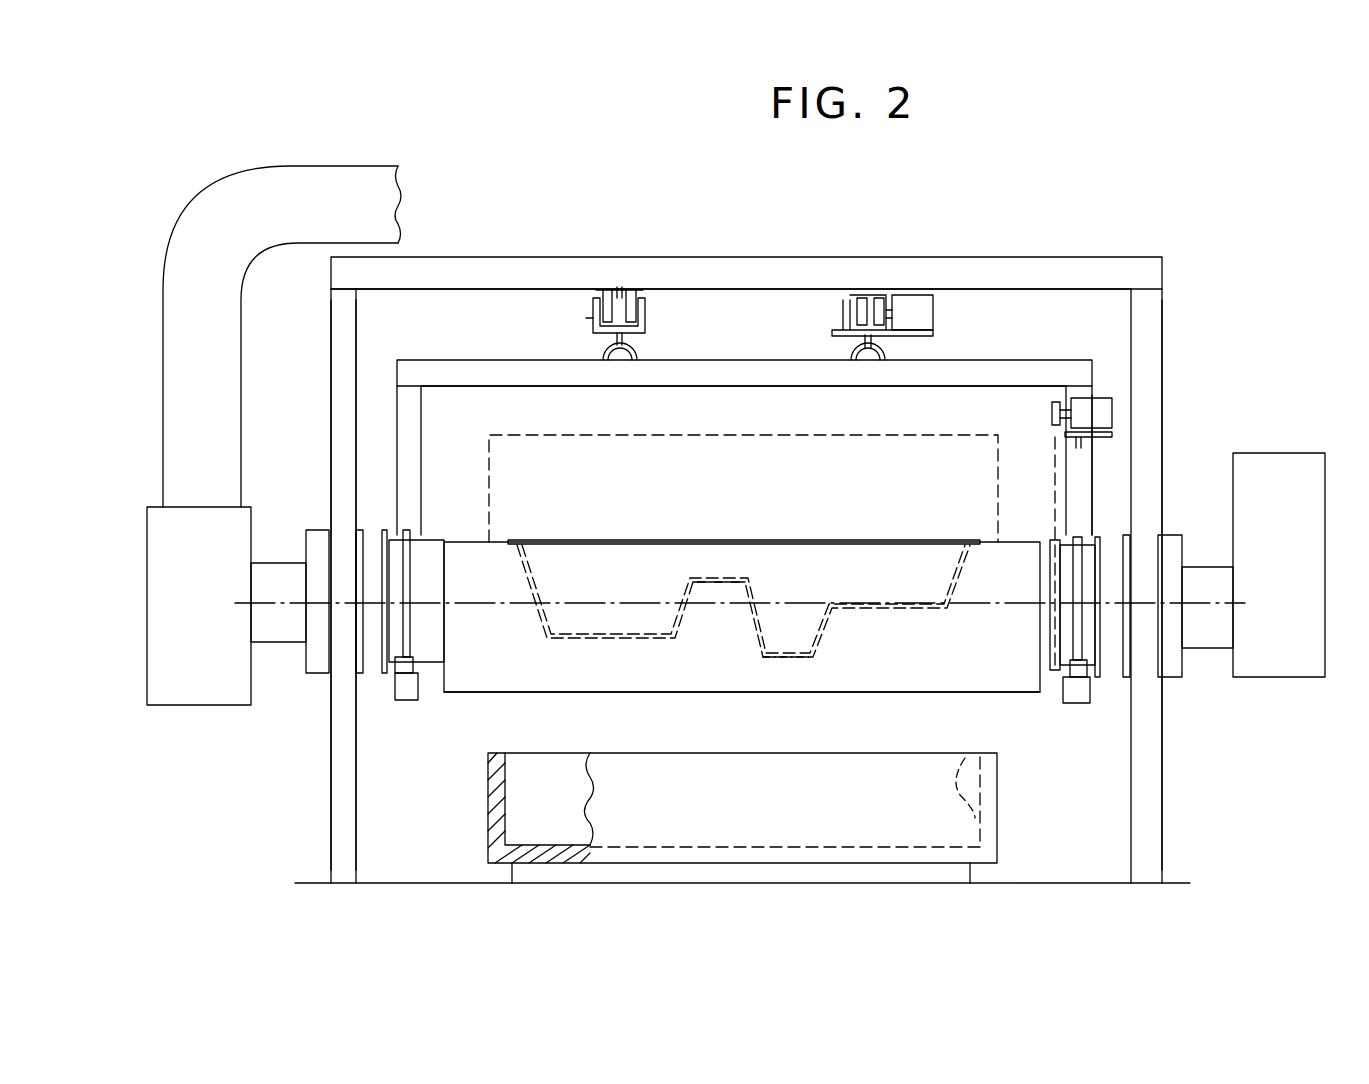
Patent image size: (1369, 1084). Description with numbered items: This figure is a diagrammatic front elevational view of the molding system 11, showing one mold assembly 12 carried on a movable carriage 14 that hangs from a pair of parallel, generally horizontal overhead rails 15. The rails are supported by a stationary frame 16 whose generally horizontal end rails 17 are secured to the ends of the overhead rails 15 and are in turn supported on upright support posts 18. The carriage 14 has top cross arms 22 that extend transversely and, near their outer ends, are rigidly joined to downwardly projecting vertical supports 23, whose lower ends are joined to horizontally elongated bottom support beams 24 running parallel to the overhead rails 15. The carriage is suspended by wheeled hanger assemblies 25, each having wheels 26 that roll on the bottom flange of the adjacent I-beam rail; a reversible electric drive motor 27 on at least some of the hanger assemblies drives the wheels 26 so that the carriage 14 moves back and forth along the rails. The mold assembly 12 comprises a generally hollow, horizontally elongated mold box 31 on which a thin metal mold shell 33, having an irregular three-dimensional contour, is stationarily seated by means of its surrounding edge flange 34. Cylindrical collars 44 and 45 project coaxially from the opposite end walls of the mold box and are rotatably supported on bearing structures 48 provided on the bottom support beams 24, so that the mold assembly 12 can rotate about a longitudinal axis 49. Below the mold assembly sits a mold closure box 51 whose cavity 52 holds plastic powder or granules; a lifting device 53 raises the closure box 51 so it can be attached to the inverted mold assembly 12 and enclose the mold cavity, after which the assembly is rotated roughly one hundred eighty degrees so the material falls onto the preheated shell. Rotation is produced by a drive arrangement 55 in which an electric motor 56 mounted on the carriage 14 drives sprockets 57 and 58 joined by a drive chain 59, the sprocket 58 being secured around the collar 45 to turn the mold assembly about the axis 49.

The molding system 11 is at (1224, 238).
The mold assembly 12 is at (532, 697).
The carriage 14 is at (1040, 365).
The overhead rails 15 is at (620, 290).
The stationary frame 16 is at (1137, 256).
The end rails 17 is at (1030, 270).
The upright support posts 18 is at (336, 342).
The top cross arms 22 is at (628, 376).
The vertical supports 23 is at (341, 408).
The bottom support beams 24 is at (412, 690).
The wheeled hanger assembly 25 is at (580, 318).
The wheels 26 is at (645, 310).
The reversible electric drive motor 27 is at (933, 318).
The mold box 31 is at (655, 684).
The mold shell 33 is at (720, 578).
The edge flange 34 is at (528, 540).
The collar 44 is at (430, 550).
The collar 45 is at (1088, 565).
The bearing structures 48 is at (402, 668).
The axis 49 is at (780, 603).
The mold closure box 51 is at (662, 428).
The cavity 52 is at (785, 777).
The lifting device 53 is at (862, 880).
The drive arrangement 55 is at (1028, 443).
The electric motor 56 is at (1103, 417).
The sprocket 57 is at (1052, 410).
The sprocket 58 is at (1078, 585).
The drive chain 59 is at (1053, 478).